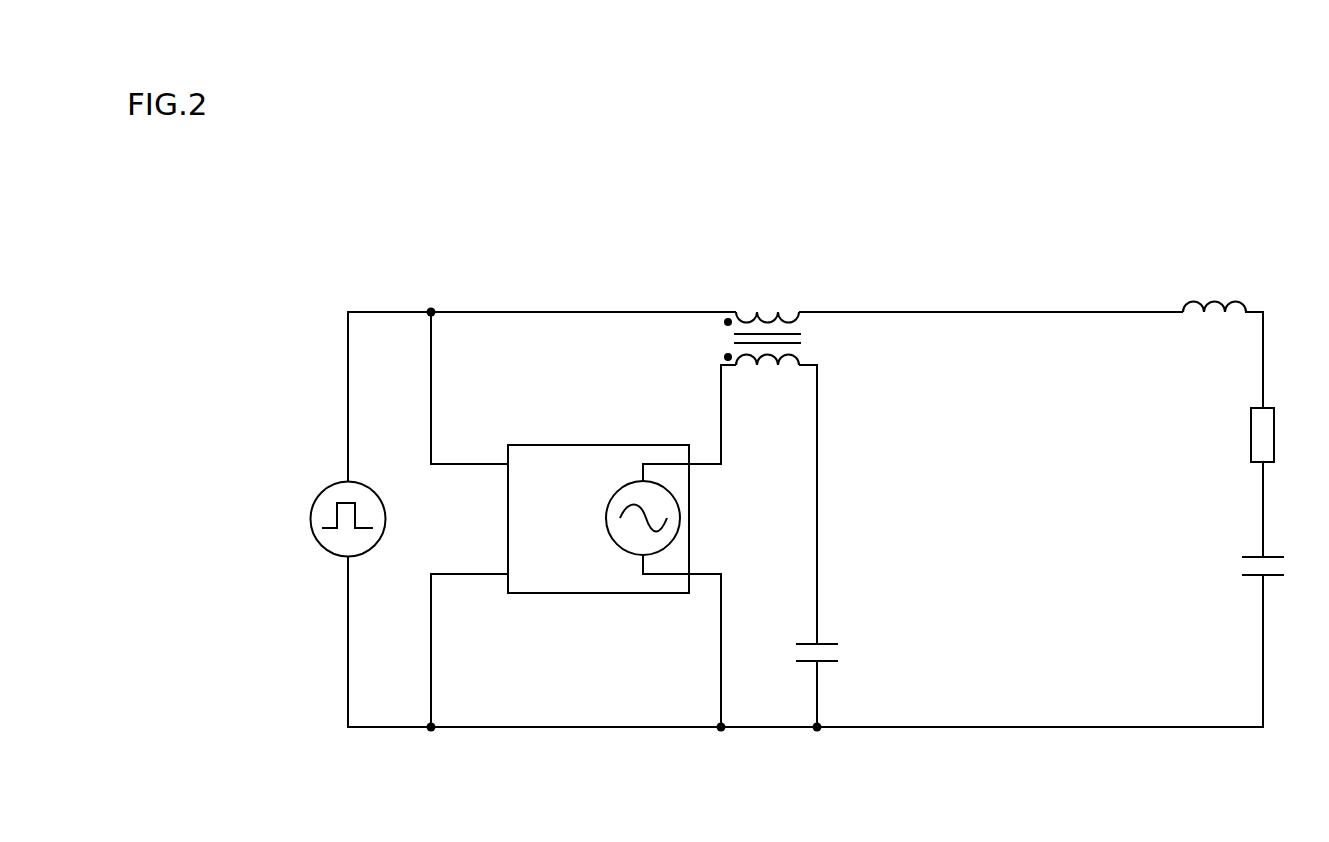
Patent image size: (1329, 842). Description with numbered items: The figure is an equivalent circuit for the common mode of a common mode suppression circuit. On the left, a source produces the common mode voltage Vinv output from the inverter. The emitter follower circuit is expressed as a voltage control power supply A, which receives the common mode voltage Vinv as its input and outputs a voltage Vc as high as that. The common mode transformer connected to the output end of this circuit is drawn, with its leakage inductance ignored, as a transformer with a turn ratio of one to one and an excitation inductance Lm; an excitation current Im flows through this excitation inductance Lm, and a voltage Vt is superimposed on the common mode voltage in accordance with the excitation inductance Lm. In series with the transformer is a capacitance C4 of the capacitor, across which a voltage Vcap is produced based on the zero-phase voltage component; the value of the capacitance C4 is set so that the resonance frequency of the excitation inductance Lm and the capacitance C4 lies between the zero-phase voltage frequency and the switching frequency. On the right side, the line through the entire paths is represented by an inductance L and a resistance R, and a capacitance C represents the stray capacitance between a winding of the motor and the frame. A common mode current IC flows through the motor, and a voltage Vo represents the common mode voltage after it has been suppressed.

The voltage control power supply A is at (560, 445).
The common mode voltage Vinv is at (396, 480).
The voltage Vc is at (704, 480).
The excitation inductance Lm is at (741, 347).
The voltage Vt is at (798, 297).
The excitation current Im is at (744, 580).
The capacitance C4 is at (801, 666).
The voltage Vcap is at (854, 617).
The common mode voltage Vo is at (1149, 340).
The inductance L is at (1214, 291).
The common mode current IC is at (1280, 330).
The resistance R is at (1277, 422).
The capacitance C is at (1273, 567).